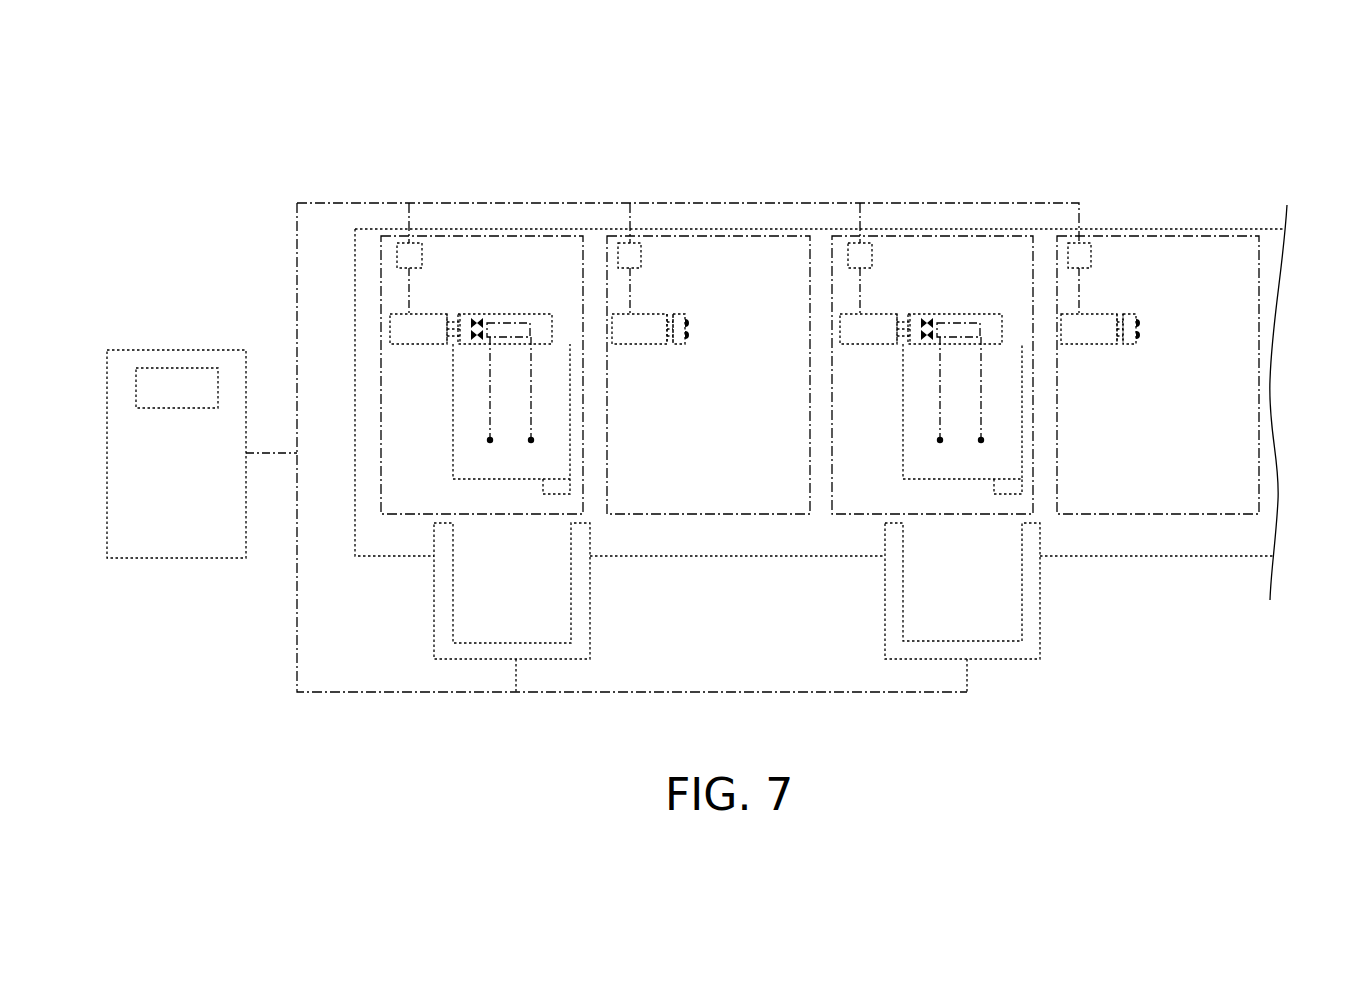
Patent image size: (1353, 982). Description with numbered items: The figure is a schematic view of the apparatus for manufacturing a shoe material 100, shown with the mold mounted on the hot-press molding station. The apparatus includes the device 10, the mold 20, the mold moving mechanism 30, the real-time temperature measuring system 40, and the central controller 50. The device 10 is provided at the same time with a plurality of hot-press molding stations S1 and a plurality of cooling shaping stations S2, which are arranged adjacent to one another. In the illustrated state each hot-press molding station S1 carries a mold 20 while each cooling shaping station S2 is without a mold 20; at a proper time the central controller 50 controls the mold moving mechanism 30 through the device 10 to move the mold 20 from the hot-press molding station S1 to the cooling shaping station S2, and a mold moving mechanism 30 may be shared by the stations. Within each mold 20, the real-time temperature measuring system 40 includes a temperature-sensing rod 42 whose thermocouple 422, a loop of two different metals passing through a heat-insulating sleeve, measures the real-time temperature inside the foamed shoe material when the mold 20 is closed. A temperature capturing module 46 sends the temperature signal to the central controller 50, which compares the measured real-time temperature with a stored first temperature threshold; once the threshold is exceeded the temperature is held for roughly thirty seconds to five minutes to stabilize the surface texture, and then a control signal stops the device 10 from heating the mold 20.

The apparatus for manufacturing a shoe material 100 is at (242, 145).
The device 10 is at (1231, 556).
The mold 20 is at (572, 460).
The mold moving mechanism 30 is at (590, 592).
The real-time temperature measuring system 40 is at (480, 310).
The temperature-sensing rod 42 is at (490, 440).
The thermocouple 422 is at (650, 314).
The temperature capturing module 46 is at (397, 252).
The central controller 50 is at (175, 349).
The hot-press molding station S1 is at (475, 236).
The cooling shaping station S2 is at (660, 236).